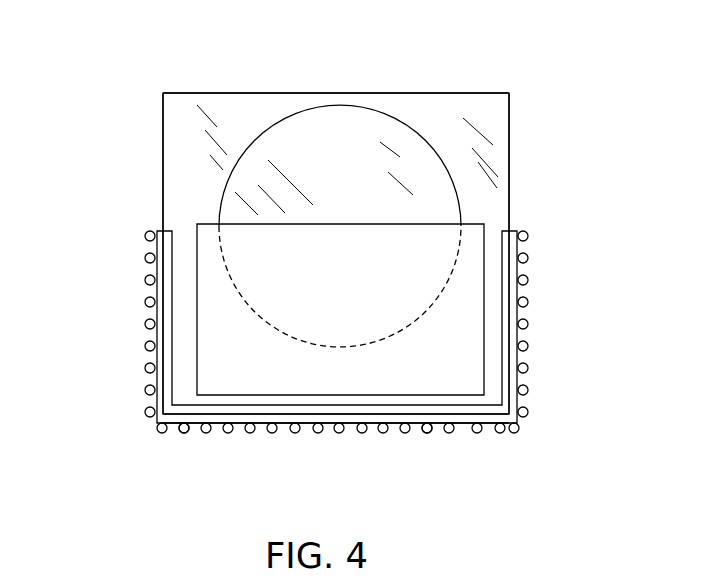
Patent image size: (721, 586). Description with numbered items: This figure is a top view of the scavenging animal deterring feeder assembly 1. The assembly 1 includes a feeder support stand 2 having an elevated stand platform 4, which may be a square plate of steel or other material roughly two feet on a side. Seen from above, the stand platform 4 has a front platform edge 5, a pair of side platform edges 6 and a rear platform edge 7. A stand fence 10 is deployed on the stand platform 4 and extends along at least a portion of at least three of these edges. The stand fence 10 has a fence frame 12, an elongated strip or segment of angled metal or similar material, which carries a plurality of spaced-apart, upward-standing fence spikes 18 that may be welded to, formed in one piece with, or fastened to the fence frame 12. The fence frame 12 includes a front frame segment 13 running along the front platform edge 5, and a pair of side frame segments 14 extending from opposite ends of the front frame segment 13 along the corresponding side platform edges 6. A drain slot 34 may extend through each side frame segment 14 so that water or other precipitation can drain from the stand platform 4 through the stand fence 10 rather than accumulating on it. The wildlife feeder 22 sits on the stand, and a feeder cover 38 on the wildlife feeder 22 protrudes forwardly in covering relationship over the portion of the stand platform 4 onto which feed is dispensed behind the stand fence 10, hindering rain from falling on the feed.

The assembly 1 is at (572, 62).
The feeder support stand 2 is at (161, 199).
The stand platform 4 is at (260, 88).
The front platform edge 5 is at (283, 425).
The side platform edges 6 is at (510, 110).
The rear platform edge 7 is at (417, 92).
The stand fence 10 is at (142, 409).
The fence frame 12 is at (195, 434).
The front frame segment 13 is at (436, 430).
The side frame segments 14 is at (156, 305).
The fence spikes 18 is at (145, 371).
The wildlife feeder 22 is at (312, 103).
The drain slot 34 is at (145, 268).
The feeder cover 38 is at (211, 222).